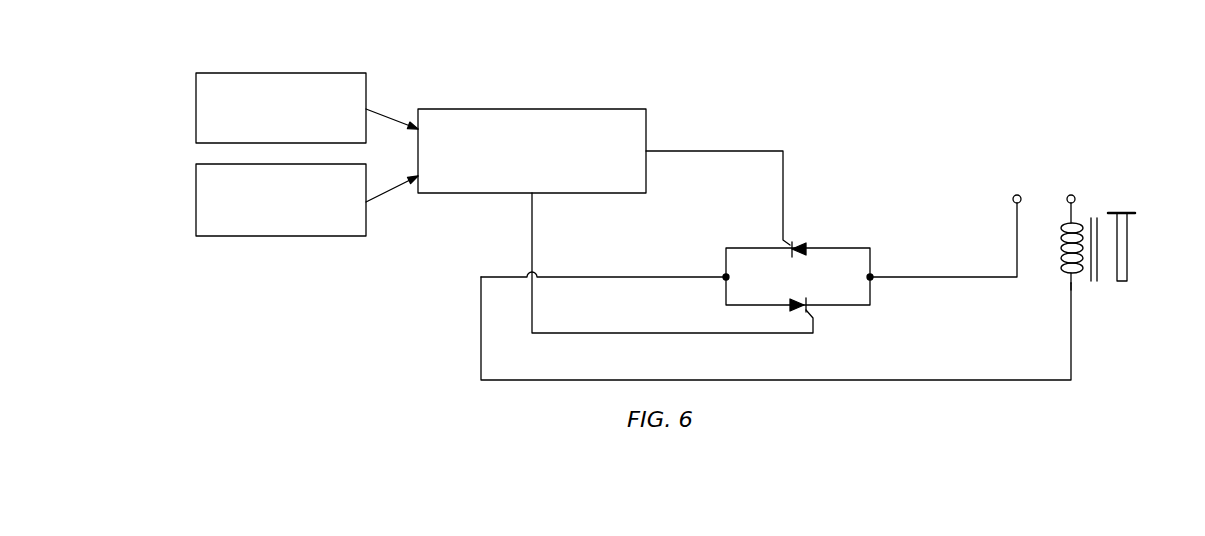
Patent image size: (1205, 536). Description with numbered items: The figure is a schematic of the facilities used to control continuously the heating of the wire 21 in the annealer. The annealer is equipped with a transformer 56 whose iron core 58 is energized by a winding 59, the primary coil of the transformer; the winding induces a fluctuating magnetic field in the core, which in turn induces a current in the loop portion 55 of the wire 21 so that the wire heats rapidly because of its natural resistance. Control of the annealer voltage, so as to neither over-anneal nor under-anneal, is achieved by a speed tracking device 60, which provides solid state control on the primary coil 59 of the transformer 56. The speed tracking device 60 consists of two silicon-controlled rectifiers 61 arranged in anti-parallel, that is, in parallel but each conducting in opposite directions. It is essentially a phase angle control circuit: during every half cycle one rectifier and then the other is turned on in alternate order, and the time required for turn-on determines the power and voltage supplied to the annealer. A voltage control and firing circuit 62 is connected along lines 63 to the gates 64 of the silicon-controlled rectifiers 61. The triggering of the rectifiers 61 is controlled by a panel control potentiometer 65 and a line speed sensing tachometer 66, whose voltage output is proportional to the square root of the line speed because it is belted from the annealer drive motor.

The wire 21 is at (1135, 212).
The loop portion 55 is at (1127, 257).
The transformer 56 is at (1050, 277).
The iron core 58 is at (1097, 281).
The winding 59 is at (1075, 284).
The speed tracking device 60 is at (882, 92).
The silicon-controlled rectifiers 61 is at (806, 245).
The voltage control and firing circuit 62 is at (614, 109).
The lines 63 is at (715, 151).
The gates 64 is at (792, 243).
The panel control potentiometer 65 is at (346, 73).
The line speed sensing tachometer 66 is at (312, 236).